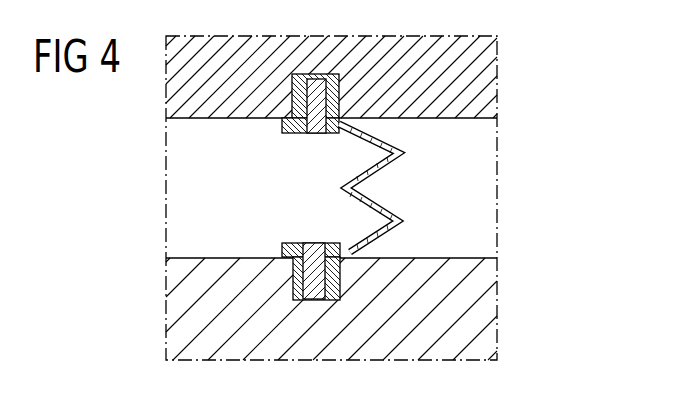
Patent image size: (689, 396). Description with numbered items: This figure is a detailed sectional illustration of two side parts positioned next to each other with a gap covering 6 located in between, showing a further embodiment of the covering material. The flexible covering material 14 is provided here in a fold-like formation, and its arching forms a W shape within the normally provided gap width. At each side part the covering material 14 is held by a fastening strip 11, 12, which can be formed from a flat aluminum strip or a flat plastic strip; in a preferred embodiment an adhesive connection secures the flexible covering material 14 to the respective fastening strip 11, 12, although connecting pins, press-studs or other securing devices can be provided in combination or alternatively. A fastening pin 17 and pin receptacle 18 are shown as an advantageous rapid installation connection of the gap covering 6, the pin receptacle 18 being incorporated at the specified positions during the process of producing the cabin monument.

The gap covering 6 is at (86, 182).
The fastening strip 11 is at (282, 130).
The fastening strip 12 is at (282, 250).
The flexible covering material 14 is at (390, 164).
The fastening pin 17 is at (311, 244).
The pin receptacle 18 is at (340, 283).